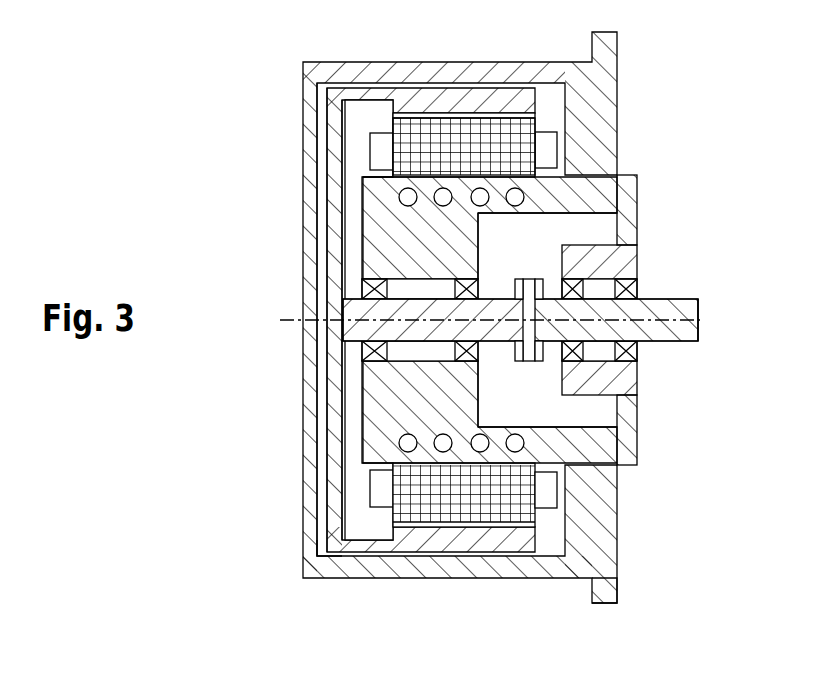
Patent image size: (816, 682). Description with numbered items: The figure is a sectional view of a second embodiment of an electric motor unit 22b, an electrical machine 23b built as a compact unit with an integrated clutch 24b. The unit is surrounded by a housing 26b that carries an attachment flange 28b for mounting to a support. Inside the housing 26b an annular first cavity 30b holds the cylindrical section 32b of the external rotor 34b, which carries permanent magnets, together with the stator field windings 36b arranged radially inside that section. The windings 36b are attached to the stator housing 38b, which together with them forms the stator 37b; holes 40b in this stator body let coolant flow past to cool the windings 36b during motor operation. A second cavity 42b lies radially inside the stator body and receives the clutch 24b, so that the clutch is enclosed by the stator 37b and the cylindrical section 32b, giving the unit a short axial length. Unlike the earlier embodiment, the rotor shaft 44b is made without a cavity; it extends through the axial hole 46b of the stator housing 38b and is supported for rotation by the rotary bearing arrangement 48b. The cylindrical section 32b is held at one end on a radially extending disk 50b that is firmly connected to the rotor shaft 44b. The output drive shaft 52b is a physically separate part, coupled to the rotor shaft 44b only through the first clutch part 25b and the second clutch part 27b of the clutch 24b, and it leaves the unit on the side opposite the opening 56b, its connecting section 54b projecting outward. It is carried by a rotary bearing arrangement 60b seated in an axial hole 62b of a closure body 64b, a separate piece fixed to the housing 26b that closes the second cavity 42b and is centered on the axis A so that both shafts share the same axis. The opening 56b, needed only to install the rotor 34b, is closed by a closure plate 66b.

The electric motor unit 22b is at (518, 597).
The electrical machine 23b is at (549, 512).
The clutch 24b is at (617, 183).
The first clutch part 25b is at (524, 283).
The housing 26b is at (590, 142).
The second clutch part 27b is at (534, 362).
The attachment flange 28b is at (614, 589).
The first cavity 30b is at (547, 97).
The cylindrical section 32b is at (458, 100).
The rotor 34b is at (335, 117).
The stator field windings 36b is at (517, 135).
The stator 37b is at (381, 189).
The stator housing 38b is at (392, 213).
The holes 40b is at (515, 435).
The second cavity 42b is at (597, 415).
The rotor shaft 44b is at (340, 270).
The axial hole 46b is at (407, 353).
The rotary bearing arrangement 48b is at (343, 348).
The disk 50b is at (335, 520).
The output drive shaft 52b is at (690, 300).
The connecting section 54b is at (695, 338).
The opening 56b is at (325, 545).
The rotary bearing arrangement 60b is at (633, 287).
The axial hole 62b is at (595, 370).
The closure body 64b is at (627, 223).
The closure plate 66b is at (330, 470).
The axis A is at (288, 322).